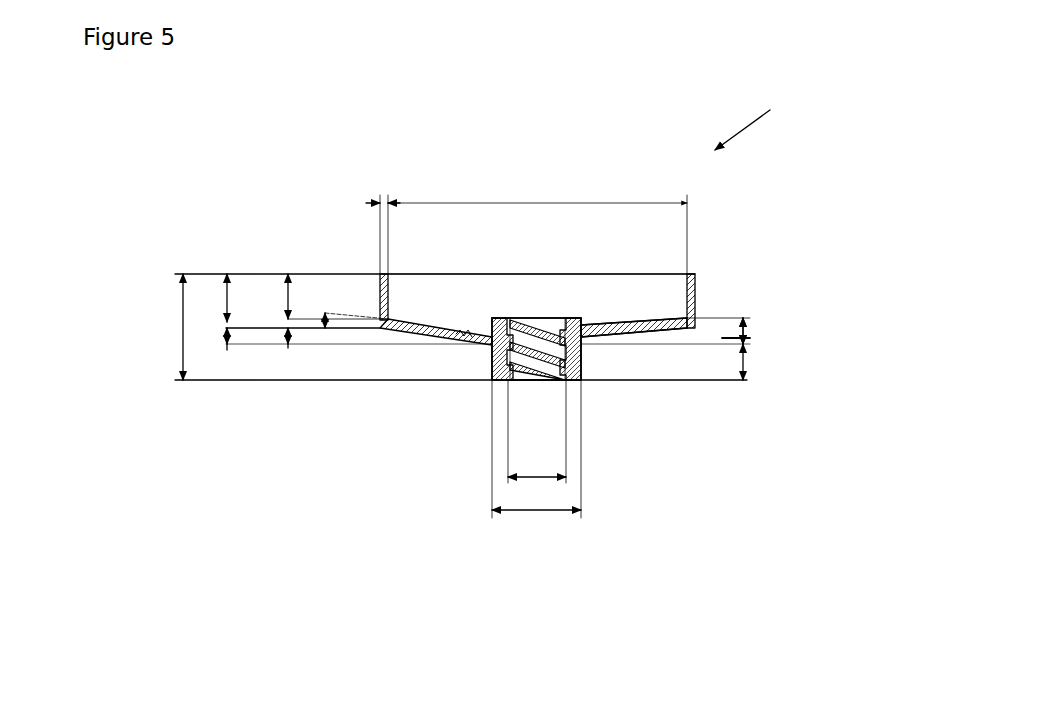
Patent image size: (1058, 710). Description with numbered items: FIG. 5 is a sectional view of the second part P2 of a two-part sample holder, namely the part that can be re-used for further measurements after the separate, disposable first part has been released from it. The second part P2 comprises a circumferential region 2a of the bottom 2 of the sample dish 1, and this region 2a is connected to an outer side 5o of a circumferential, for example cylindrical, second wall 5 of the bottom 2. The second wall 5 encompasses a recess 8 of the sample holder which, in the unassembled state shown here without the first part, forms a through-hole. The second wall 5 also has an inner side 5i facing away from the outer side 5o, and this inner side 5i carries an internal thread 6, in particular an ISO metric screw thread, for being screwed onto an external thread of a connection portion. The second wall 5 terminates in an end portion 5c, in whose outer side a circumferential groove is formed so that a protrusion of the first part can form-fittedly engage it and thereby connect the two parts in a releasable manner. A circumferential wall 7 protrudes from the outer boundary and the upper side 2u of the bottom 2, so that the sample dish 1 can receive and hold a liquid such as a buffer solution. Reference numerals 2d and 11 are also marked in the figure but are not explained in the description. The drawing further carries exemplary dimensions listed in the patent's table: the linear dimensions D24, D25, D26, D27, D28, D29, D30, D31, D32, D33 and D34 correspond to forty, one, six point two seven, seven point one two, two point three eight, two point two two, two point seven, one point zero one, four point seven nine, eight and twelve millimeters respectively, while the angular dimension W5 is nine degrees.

The sample dish 1 is at (653, 287).
The bottom 2 is at (402, 335).
The upper side of the bottom 2u is at (645, 325).
The flange lower surface 2d is at (653, 335).
The circumferential region of the bottom 2a is at (613, 340).
The second wall 5 is at (500, 367).
The end portion of the second wall 5c is at (497, 318).
The inner side of the second wall 5i is at (492, 377).
The outer side of the second wall 5o is at (585, 370).
The thread 6 is at (535, 383).
The circumferential wall 7 is at (695, 278).
The recess 8 is at (533, 318).
The cup top surface 11 is at (443, 276).
The second part P2 is at (759, 121).
The angular dimension W5 is at (325, 312).
The dimension D24 is at (597, 203).
The dimension D25 is at (380, 195).
The dimension D26 is at (288, 293).
The dimension D27 is at (227, 300).
The dimension D28 is at (225, 330).
The dimension D29 is at (183, 312).
The dimension D30 is at (747, 321).
The dimension D31 is at (747, 338).
The dimension D32 is at (747, 367).
The dimension D33 is at (537, 477).
The dimension D34 is at (513, 510).